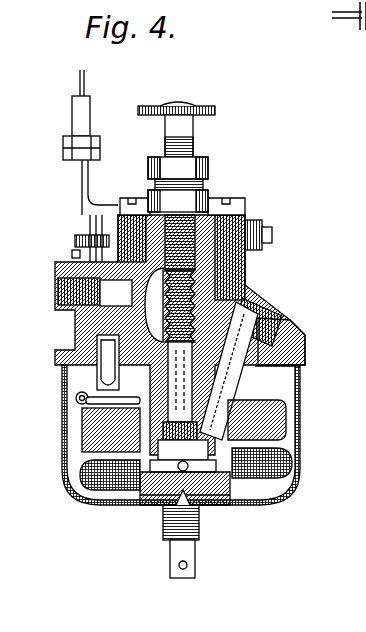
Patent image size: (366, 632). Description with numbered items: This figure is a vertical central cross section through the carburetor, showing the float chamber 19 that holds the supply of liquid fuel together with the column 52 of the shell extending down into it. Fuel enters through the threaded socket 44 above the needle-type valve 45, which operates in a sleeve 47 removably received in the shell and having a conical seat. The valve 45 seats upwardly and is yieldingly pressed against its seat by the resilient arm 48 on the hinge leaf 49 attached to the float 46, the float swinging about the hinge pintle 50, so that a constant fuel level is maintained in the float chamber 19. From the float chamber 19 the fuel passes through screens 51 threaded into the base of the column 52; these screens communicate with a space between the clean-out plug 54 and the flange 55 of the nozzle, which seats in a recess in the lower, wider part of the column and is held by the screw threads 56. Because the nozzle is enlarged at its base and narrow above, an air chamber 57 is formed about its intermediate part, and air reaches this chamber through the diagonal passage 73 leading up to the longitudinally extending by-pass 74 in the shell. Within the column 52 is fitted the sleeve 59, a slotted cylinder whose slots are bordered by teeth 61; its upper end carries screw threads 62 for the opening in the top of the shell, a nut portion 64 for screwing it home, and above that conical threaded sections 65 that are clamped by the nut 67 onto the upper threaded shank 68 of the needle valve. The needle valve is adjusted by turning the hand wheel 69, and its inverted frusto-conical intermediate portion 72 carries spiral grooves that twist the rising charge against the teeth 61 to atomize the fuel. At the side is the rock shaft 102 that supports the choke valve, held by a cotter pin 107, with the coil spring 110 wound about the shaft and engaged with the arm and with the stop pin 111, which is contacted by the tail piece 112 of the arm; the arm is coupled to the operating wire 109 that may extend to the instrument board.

The float chamber 19 is at (80, 504).
The threaded socket 44 is at (56, 298).
The valve 45 is at (98, 380).
The float 46 is at (98, 446).
The sleeve 47 is at (96, 340).
The resilient arm 48 is at (88, 410).
The hinge leaf 49 is at (96, 430).
The hinge pintle 50 is at (78, 402).
The screens 51 is at (102, 492).
The column 52 is at (226, 500).
The clean-out plug 54 is at (168, 500).
The flange 55 is at (132, 492).
The screw threads 56 is at (236, 446).
The air chamber 57 is at (236, 420).
The sleeve 59 is at (198, 295).
The teeth 61 is at (196, 318).
The screw threads 62 is at (243, 214).
The nut portion 64 is at (212, 206).
The conical threaded sections 65 is at (205, 194).
The nut 67 is at (208, 165).
The threaded shank 68 is at (193, 148).
The hand wheel 69 is at (195, 110).
The intermediate portion 72 is at (192, 307).
The diagonal passage 73 is at (262, 368).
The by-pass 74 is at (296, 340).
The shaft 102 is at (272, 233).
The cotter pin 107 is at (264, 220).
The operating wire 109 is at (80, 74).
The coil spring 110 is at (84, 214).
The stop pin 111 is at (74, 238).
The tail piece 112 is at (72, 255).